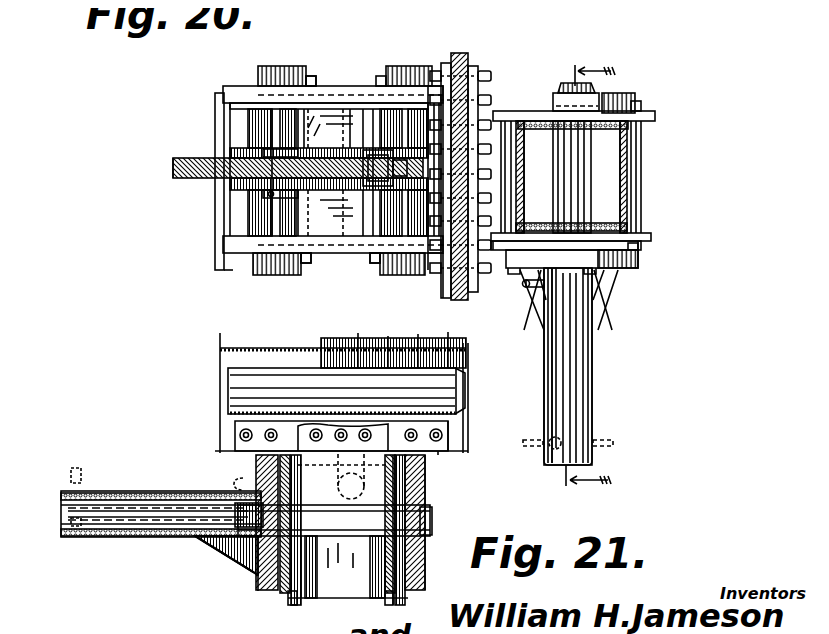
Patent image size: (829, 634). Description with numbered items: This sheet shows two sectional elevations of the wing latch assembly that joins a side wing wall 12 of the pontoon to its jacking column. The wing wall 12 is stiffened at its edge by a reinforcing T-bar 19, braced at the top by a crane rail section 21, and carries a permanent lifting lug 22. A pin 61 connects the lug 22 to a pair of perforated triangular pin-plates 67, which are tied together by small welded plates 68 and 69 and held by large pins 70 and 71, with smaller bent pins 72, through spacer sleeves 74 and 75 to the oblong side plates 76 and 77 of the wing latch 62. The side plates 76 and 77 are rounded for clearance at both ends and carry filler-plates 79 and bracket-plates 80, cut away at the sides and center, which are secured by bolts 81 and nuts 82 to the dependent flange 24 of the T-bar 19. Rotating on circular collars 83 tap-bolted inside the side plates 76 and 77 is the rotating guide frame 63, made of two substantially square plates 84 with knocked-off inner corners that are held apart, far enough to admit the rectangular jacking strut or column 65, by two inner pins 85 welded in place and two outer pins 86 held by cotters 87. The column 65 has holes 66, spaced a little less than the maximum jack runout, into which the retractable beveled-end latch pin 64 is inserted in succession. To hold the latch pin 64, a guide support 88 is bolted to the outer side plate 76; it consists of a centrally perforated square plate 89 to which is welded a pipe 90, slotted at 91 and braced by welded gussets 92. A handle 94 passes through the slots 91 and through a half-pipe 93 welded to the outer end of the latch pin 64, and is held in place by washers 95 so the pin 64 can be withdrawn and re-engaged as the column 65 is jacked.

In FIG. 21, the side wing wall 12 is at (213, 335).
In FIG. 21, the reinforcing T-bar 19 is at (220, 360).
In FIG. 20, the crane rail section 21 is at (580, 262).
In FIG. 21, the crane rail section 21 is at (320, 382).
In FIG. 20, the permanent lifting lug 22 is at (178, 170).
In FIG. 20, the dependent flange 24 is at (452, 45).
In FIG. 21, the dependent flange 24 is at (214, 428).
In FIG. 20, the pin 61 is at (262, 187).
In FIG. 20, the wing latch 62 is at (356, 243).
In FIG. 21, the wing latch 62 is at (417, 475).
In FIG. 20, the rotating guide frame 63 is at (645, 108).
In FIG. 21, the rotating guide frame 63 is at (363, 578).
In FIG. 20, the retractable beveled-end latch pin 64 is at (585, 156).
In FIG. 21, the retractable beveled-end latch pin 64 is at (410, 510).
In FIG. 20, the jacking strut or column 65 is at (618, 182).
In FIG. 21, the jacking strut or column 65 is at (337, 587).
In FIG. 21, the holes 66 is at (378, 578).
In FIG. 20, the perforated triangular pin-plates 67 is at (331, 113).
In FIG. 20, the small welded plate 68 is at (287, 242).
In FIG. 20, the small welded plate 69 is at (333, 163).
In FIG. 21, the small welded plate 69 is at (196, 344).
In FIG. 20, the large pin 70 is at (288, 60).
In FIG. 20, the large pin 71 is at (389, 59).
In FIG. 20, the bent pin 72 is at (304, 74).
In FIG. 20, the spacer sleeve 74 is at (260, 115).
In FIG. 20, the spacer sleeve 75 is at (414, 58).
In FIG. 20, the oblong side plate 76 is at (239, 246).
In FIG. 21, the oblong side plate 76 is at (260, 583).
In FIG. 20, the oblong side plate 77 is at (236, 84).
In FIG. 21, the oblong side plate 77 is at (415, 565).
In FIG. 20, the filler-plate 79 is at (462, 66).
In FIG. 20, the bracket-plate 80 is at (457, 280).
In FIG. 21, the bracket-plate 80 is at (451, 423).
In FIG. 20, the bolt 81 is at (481, 90).
In FIG. 21, the bolt 81 is at (262, 421).
In FIG. 20, the nut 82 is at (430, 266).
In FIG. 21, the nut 82 is at (440, 398).
In FIG. 20, the circular collar 83 is at (586, 101).
In FIG. 21, the circular collar 83 is at (245, 553).
In FIG. 20, the square plate 84 is at (645, 115).
In FIG. 21, the square plate 84 is at (378, 474).
In FIG. 20, the inner pin 85 is at (506, 160).
In FIG. 20, the outer pin 86 is at (630, 203).
In FIG. 20, the cotter 87 is at (633, 102).
In FIG. 20, the guide support 88 is at (583, 355).
In FIG. 21, the guide support 88 is at (193, 542).
In FIG. 20, the centrally perforated square plate 89 is at (607, 270).
In FIG. 21, the centrally perforated square plate 89 is at (250, 573).
In FIG. 20, the pipe 90 is at (583, 407).
In FIG. 21, the pipe 90 is at (124, 492).
In FIG. 20, the slot 91 is at (547, 372).
In FIG. 21, the slot 91 is at (168, 496).
In FIG. 20, the welded gusset 92 is at (548, 308).
In FIG. 21, the welded gusset 92 is at (190, 535).
In FIG. 21, the half-pipe 93 is at (193, 541).
In FIG. 20, the handle 94 is at (528, 290).
In FIG. 21, the handle 94 is at (65, 460).
In FIG. 20, the washer 95 is at (547, 300).